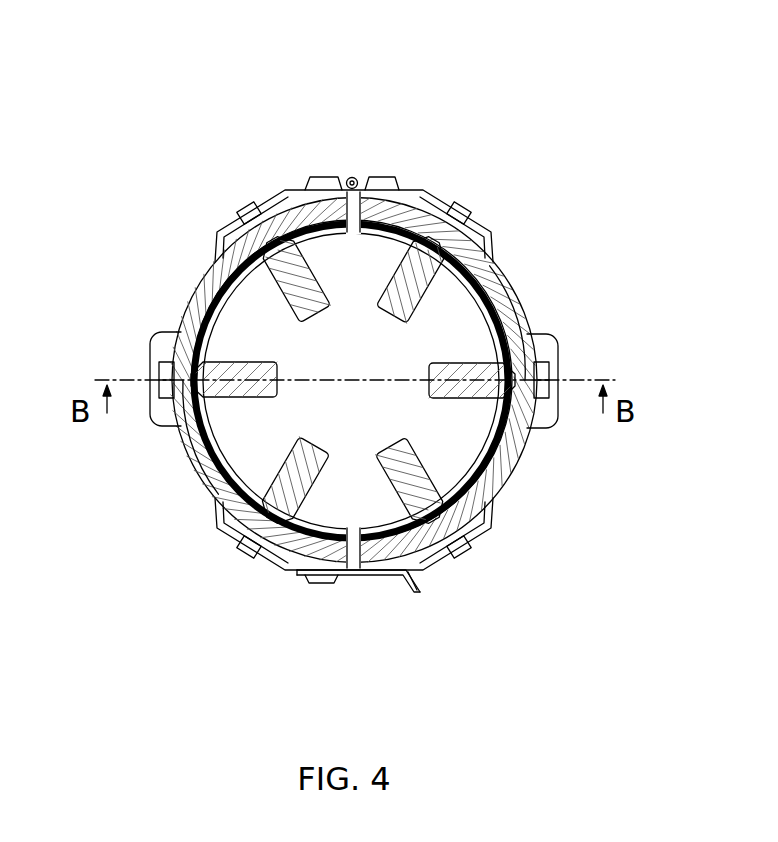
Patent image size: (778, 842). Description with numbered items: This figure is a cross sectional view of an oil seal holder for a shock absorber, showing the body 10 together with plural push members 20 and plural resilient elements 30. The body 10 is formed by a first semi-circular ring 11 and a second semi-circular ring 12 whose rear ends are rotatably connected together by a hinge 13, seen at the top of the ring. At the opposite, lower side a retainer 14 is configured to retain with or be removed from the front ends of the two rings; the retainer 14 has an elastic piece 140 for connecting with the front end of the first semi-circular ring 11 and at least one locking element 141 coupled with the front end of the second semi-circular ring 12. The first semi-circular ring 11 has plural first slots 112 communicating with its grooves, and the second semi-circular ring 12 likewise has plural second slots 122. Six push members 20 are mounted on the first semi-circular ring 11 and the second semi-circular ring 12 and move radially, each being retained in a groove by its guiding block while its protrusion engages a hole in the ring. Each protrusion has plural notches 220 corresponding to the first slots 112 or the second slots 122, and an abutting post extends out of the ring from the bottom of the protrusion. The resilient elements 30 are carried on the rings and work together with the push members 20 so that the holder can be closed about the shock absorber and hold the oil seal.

The body 10 is at (340, 360).
The first semi-circular ring 11 is at (218, 300).
The second semi-circular ring 12 is at (511, 470).
The hinge 13 is at (357, 177).
The retainer 14 is at (363, 642).
The push member 20 is at (400, 296).
The resilient element 30 is at (490, 282).
The first slot 112 is at (205, 455).
The second slot 122 is at (512, 320).
The elastic piece 140 is at (358, 575).
The locking element 141 is at (384, 577).
The notch 220 is at (165, 337).